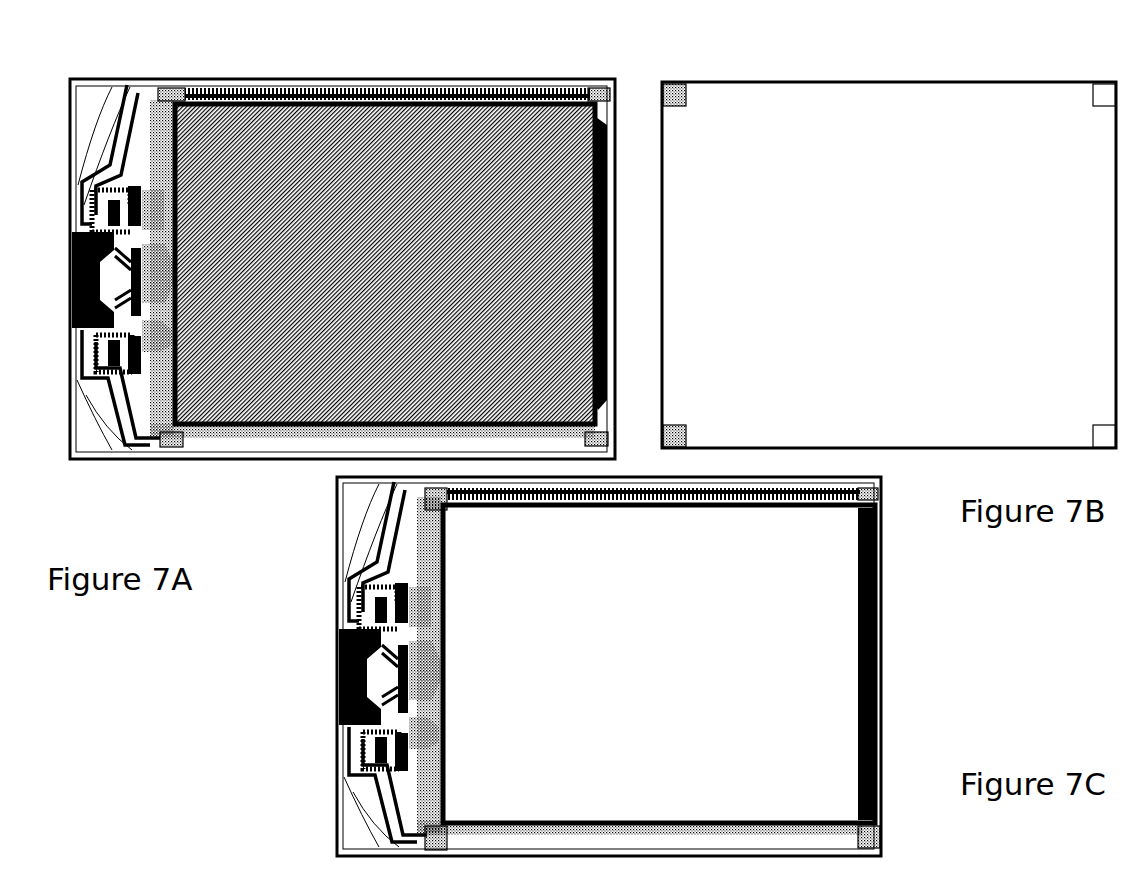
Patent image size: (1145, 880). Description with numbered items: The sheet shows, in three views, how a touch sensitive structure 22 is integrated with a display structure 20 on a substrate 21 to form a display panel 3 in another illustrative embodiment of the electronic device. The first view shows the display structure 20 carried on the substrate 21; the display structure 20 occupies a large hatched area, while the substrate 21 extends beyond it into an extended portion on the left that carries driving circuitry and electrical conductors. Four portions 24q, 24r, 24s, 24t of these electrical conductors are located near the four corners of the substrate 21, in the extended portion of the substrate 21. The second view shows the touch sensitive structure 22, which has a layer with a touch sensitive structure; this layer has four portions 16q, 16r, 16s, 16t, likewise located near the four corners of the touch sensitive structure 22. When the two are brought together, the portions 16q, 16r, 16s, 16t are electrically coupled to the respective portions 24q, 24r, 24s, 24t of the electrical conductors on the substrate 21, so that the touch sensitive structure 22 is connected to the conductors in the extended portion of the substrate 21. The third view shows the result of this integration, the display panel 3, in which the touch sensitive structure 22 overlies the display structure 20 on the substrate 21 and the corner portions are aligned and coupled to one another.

In FIG. 7A, the display structure 20 is at (391, 264).
In FIG. 7A, the substrate 21 is at (105, 115).
In FIG. 7B, the touch sensitive structure 22 is at (889, 265).
In FIG. 7A, the portion of electrical conductors 24q is at (176, 91).
In FIG. 7A, the portion of electrical conductors 24r is at (622, 57).
In FIG. 7A, the portion of electrical conductors 24s is at (167, 446).
In FIG. 7A, the portion of electrical conductors 24t is at (600, 442).
In FIG. 7B, the portion of touch sensitive layer 16q is at (681, 108).
In FIG. 7B, the portion of touch sensitive layer 16r is at (1106, 92).
In FIG. 7B, the portion of touch sensitive layer 16s is at (682, 432).
In FIG. 7B, the portion of touch sensitive layer 16t is at (1108, 432).
In FIG. 7C, the display panel 3 is at (888, 642).